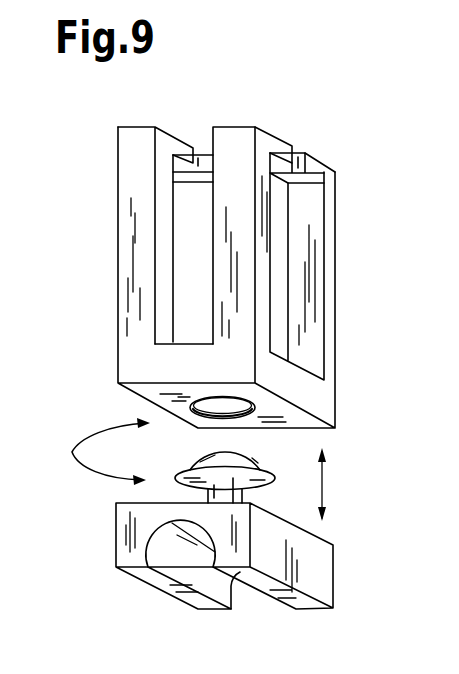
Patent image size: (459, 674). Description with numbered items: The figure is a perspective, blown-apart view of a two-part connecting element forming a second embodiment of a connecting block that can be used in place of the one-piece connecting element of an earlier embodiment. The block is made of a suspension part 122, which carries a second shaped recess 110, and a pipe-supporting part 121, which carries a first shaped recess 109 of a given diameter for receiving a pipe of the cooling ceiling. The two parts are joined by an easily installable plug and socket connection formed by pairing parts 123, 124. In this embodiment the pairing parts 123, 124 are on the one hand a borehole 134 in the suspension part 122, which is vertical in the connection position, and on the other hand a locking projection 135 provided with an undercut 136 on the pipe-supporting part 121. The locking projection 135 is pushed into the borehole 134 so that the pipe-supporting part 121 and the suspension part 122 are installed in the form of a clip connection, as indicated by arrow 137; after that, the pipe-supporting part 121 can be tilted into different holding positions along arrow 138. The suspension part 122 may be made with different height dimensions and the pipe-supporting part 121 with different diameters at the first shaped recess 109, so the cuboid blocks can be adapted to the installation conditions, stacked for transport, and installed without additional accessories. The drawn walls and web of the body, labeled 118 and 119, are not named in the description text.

The first shaped recess 109 is at (190, 567).
The second shaped recess 110 is at (186, 245).
The wall 118 is at (131, 175).
The web 119 is at (298, 160).
The pipe-supporting part 121 is at (116, 567).
The suspension part 122 is at (135, 335).
The pairing part 123 is at (244, 487).
The pairing part 124 is at (167, 409).
The borehole 134 is at (204, 409).
The locking projection 135 is at (208, 503).
The undercut 136 is at (258, 468).
The arrow 137 is at (324, 477).
The arrow 138 is at (102, 477).